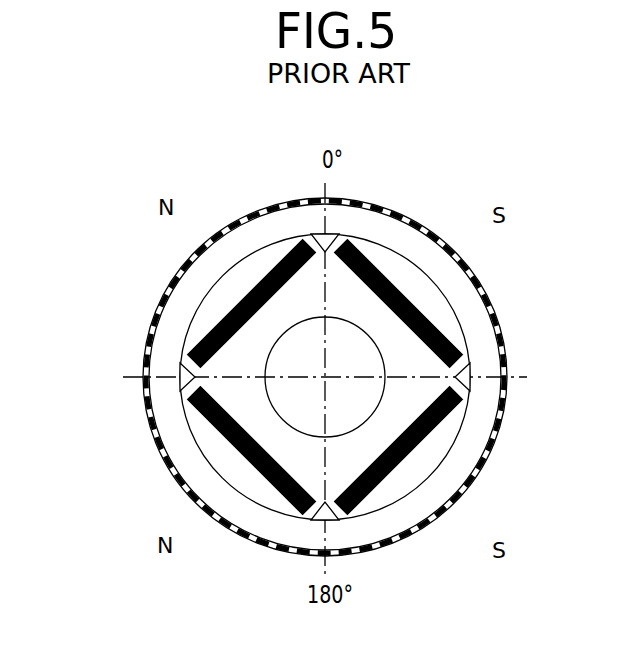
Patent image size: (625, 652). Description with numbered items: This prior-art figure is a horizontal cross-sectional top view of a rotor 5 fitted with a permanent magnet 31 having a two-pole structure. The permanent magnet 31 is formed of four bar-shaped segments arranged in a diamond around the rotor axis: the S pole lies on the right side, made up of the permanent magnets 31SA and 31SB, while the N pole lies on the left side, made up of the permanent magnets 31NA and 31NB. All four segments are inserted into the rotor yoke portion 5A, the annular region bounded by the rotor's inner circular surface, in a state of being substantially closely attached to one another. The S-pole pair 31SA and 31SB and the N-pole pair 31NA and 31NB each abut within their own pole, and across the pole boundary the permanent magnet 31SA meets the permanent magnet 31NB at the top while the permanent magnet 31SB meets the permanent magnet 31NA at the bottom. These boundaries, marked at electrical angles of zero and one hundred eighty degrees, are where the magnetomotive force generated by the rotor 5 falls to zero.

The rotor 5 is at (366, 203).
The rotor yoke portion 5A is at (218, 305).
The permanent magnet 31 is at (259, 374).
The permanent magnet 31NA is at (220, 424).
The permanent magnet 31NB is at (265, 278).
The permanent magnet 31SA is at (376, 270).
The permanent magnet 31SB is at (402, 458).